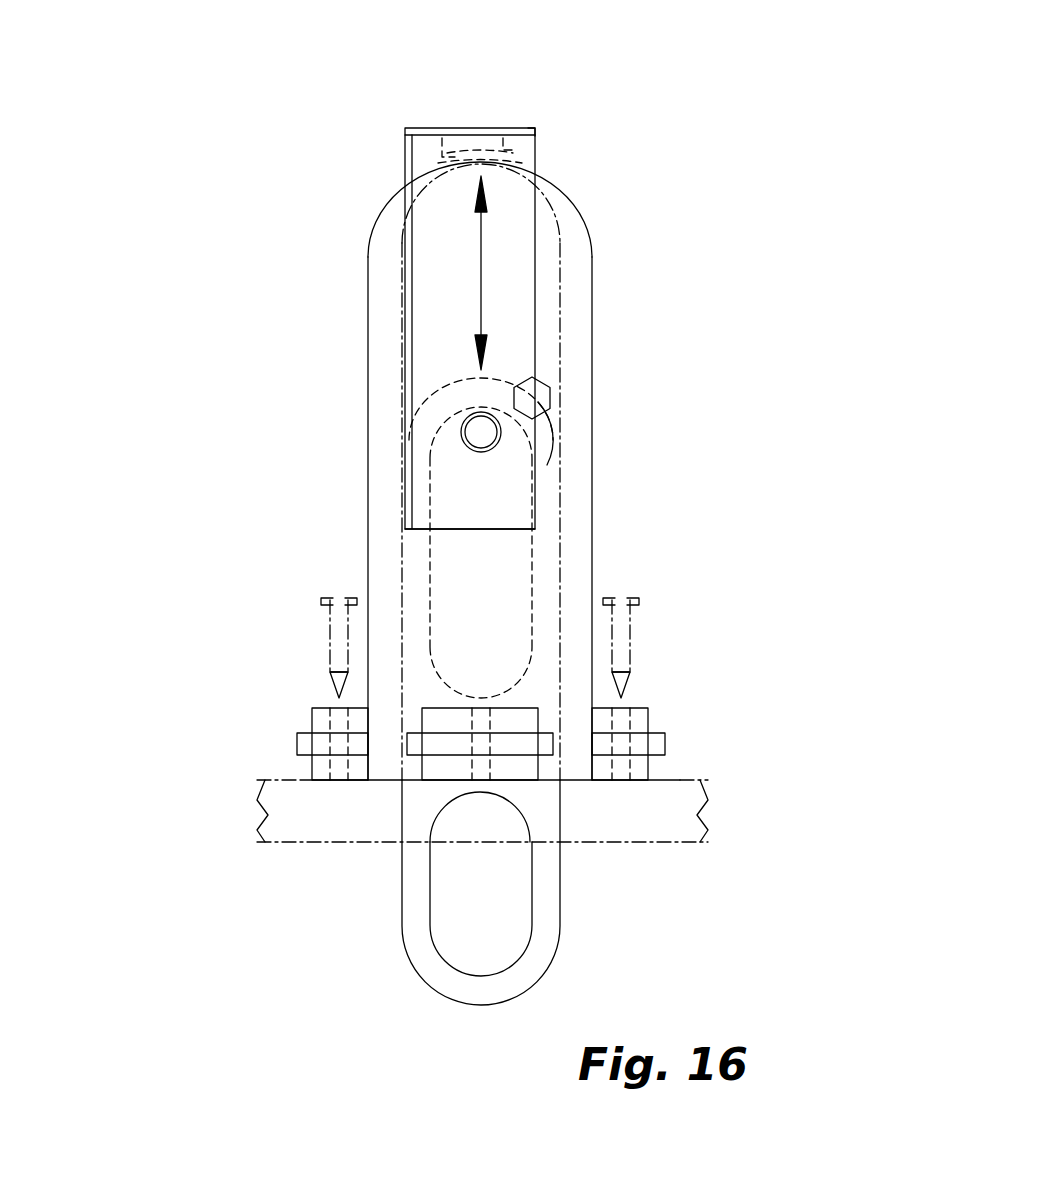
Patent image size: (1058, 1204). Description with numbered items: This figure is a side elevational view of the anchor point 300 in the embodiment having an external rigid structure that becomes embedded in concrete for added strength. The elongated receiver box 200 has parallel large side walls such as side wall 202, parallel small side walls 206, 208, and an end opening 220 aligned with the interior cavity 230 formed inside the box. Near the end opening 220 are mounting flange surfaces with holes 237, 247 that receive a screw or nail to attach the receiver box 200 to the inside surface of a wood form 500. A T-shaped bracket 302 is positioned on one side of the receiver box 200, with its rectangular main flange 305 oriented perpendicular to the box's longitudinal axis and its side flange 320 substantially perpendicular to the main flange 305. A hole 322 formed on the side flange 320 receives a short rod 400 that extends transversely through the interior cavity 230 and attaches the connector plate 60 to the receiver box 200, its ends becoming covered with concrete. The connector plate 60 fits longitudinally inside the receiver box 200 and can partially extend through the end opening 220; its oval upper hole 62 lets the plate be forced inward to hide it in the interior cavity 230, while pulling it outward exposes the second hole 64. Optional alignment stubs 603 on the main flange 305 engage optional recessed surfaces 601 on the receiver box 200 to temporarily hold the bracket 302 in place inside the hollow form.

The anchor point 300 is at (604, 60).
The T-shaped bracket 302 is at (468, 125).
The main flange 305 is at (530, 128).
The recessed surface 601 is at (442, 157).
The alignment stub 603 is at (500, 150).
The receiver box 200 is at (398, 182).
The side flange 320 is at (525, 180).
The large side wall 202 is at (452, 292).
The small side wall 206 is at (593, 295).
The small side wall 208 is at (368, 337).
The interior cavity 230 is at (550, 395).
The hole 322 is at (500, 432).
The short rod 400 is at (462, 433).
The upper hole 62 is at (425, 528).
The hole 247 is at (318, 715).
The hole 237 is at (635, 715).
The wood form 500 is at (660, 808).
The end opening 220 is at (430, 790).
The connector plate 60 is at (494, 892).
The second hole 64 is at (445, 945).